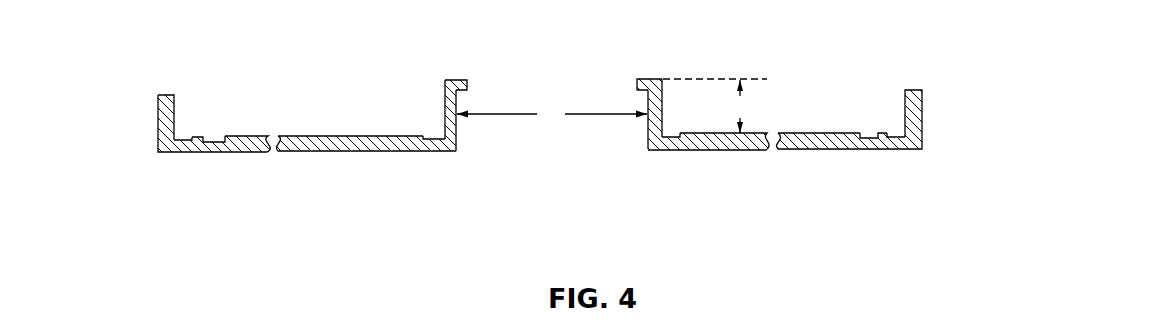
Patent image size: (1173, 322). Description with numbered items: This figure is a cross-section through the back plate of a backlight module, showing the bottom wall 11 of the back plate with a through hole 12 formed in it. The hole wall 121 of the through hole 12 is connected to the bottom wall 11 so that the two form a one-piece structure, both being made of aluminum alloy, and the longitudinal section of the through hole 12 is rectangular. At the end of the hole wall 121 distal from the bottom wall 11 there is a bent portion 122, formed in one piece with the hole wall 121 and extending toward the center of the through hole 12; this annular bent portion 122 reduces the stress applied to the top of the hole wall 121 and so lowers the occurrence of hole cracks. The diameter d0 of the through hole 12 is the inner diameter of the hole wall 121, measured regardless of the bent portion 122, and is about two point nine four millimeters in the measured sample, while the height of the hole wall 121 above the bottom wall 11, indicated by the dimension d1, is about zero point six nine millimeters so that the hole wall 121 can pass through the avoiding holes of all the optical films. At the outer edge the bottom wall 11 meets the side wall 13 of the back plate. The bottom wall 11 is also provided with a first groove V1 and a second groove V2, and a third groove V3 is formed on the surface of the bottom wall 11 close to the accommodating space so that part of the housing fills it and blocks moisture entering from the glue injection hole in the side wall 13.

The bottom wall 11 is at (392, 153).
The through hole 12 is at (597, 131).
The hole wall 121 is at (643, 103).
The bent portion 122 is at (460, 80).
The side wall 13 is at (920, 105).
The first groove V1 is at (432, 133).
The second groove V2 is at (177, 139).
The third groove V3 is at (217, 136).
The diameter of the through hole d0 is at (552, 114).
The slot depth d1 is at (715, 106).